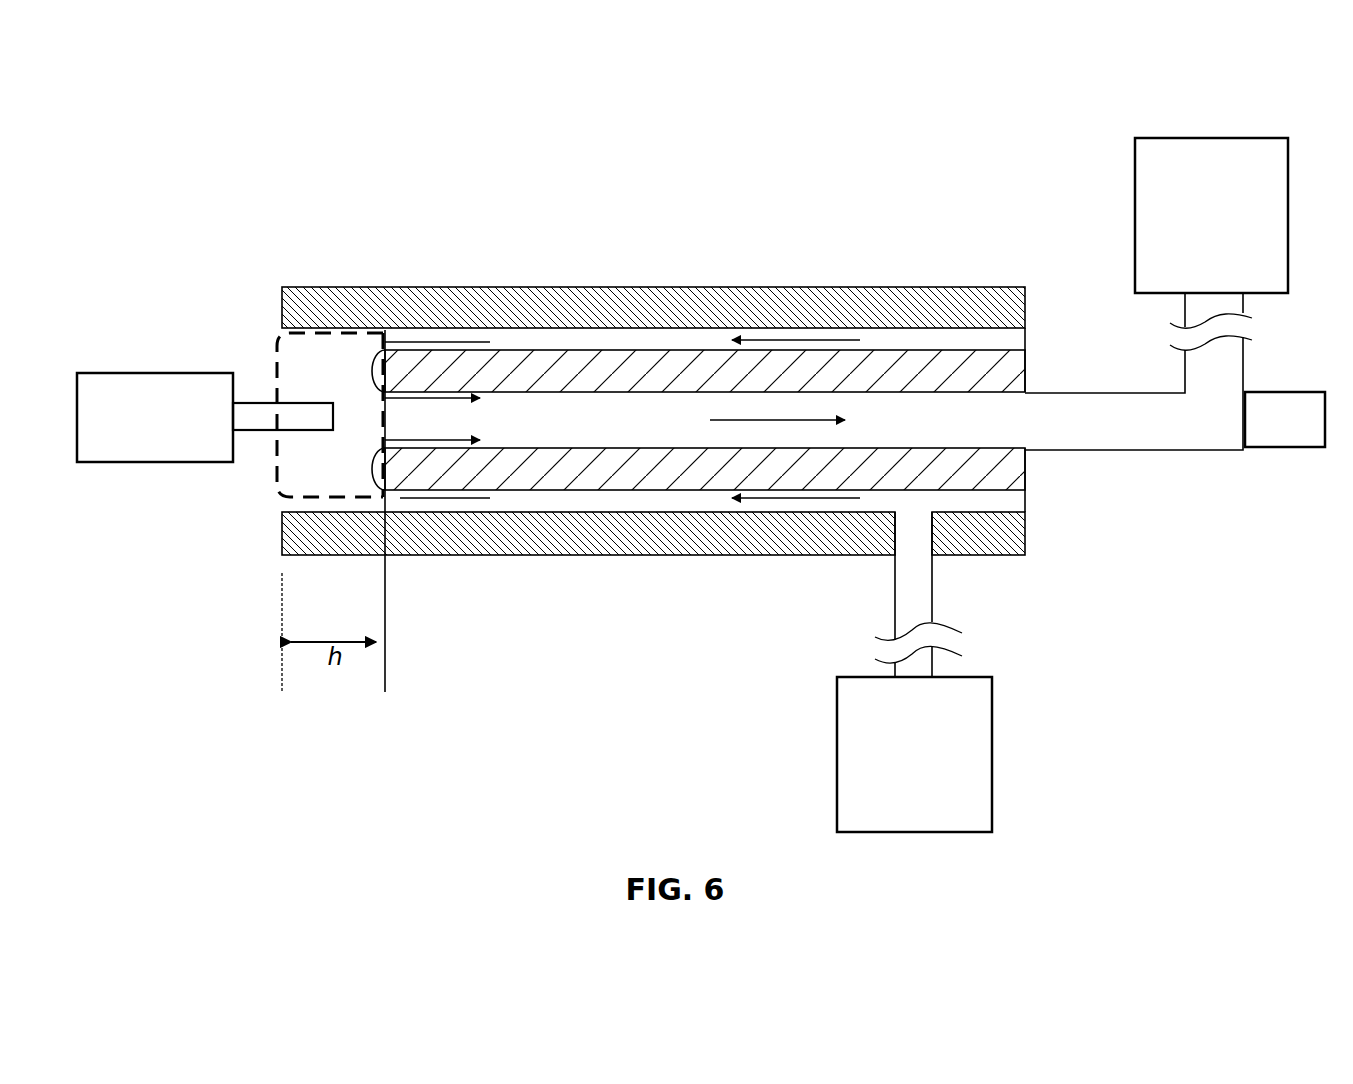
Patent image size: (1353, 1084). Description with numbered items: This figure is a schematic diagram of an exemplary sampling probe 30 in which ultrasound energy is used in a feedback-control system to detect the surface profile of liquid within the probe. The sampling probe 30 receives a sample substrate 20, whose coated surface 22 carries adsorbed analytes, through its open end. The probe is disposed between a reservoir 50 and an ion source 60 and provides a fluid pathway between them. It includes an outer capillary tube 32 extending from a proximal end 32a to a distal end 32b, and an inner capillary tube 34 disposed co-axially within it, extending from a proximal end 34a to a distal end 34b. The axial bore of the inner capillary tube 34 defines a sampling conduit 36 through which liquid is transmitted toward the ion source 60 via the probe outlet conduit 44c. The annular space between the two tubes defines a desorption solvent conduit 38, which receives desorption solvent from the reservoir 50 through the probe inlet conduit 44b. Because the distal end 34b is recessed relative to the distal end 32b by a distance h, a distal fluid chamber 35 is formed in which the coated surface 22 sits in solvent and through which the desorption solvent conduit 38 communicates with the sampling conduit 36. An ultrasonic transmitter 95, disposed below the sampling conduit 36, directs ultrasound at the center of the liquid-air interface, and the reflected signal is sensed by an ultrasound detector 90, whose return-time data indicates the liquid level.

The sample substrate 20 is at (138, 351).
The coated surface 22 is at (258, 432).
The sampling probe 30 is at (406, 196).
The outer capillary tube 32 is at (842, 298).
The proximal end of outer capillary tube 32a is at (1026, 540).
The distal end of outer capillary tube 32b is at (283, 534).
The inner capillary tube 34 is at (608, 470).
The proximal end of inner capillary tube 34a is at (1026, 372).
The distal end of inner capillary tube 34b is at (386, 470).
The distal fluid chamber 35 is at (277, 344).
The sampling conduit 36 is at (652, 417).
The desorption solvent conduit 38 is at (955, 340).
The probe inlet conduit 44b is at (914, 580).
The probe outlet conduit 44c is at (1110, 447).
The reservoir 50 is at (914, 754).
The ion source 60 is at (1211, 215).
The ultrasound detector 90 is at (1285, 419).
The ultrasonic transmitter 95 is at (1285, 419).